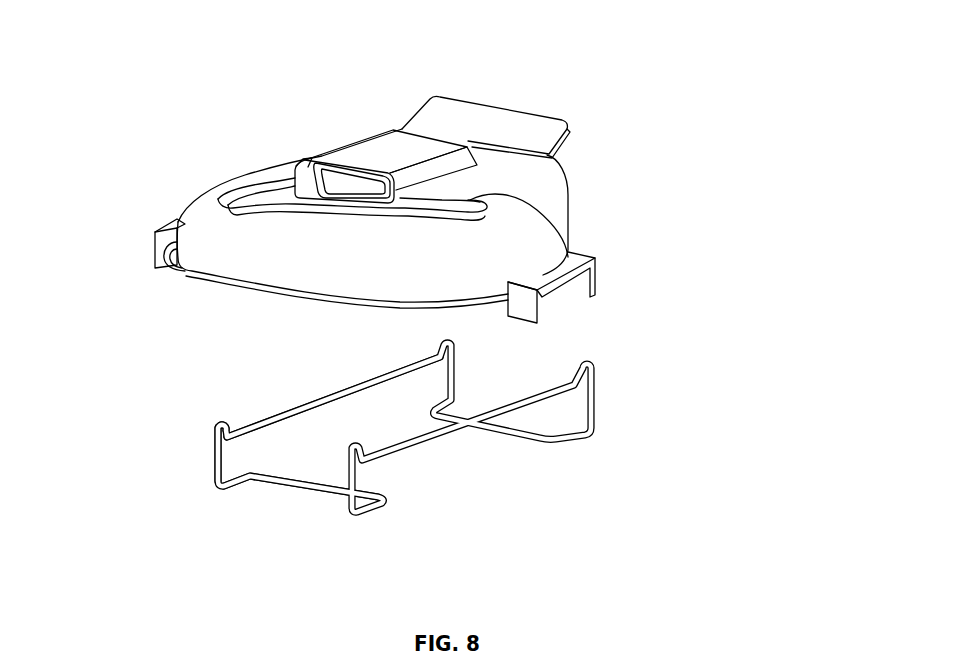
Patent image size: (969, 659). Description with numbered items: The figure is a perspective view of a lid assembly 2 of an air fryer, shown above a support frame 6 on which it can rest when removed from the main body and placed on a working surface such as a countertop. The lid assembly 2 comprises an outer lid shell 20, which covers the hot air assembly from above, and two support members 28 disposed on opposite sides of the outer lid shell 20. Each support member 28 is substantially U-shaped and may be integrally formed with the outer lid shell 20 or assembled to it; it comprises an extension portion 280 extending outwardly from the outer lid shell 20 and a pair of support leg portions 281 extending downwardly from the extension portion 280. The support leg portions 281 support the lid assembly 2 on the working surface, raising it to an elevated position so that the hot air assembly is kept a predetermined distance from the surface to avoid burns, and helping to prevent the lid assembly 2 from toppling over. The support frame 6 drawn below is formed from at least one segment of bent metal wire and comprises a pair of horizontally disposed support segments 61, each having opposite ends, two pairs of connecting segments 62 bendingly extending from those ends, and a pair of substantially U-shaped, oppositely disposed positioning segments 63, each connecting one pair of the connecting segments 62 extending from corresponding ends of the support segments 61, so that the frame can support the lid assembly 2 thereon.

The lid assembly 2 is at (456, 209).
The outer lid shell 20 is at (538, 220).
The support member 28 is at (681, 247).
The extension portion 280 is at (570, 257).
The support leg portion 281 is at (592, 282).
The support frame 6 is at (397, 448).
The support segment 61 is at (308, 407).
The connecting segment 62 is at (216, 457).
The positioning segment 63 is at (313, 490).